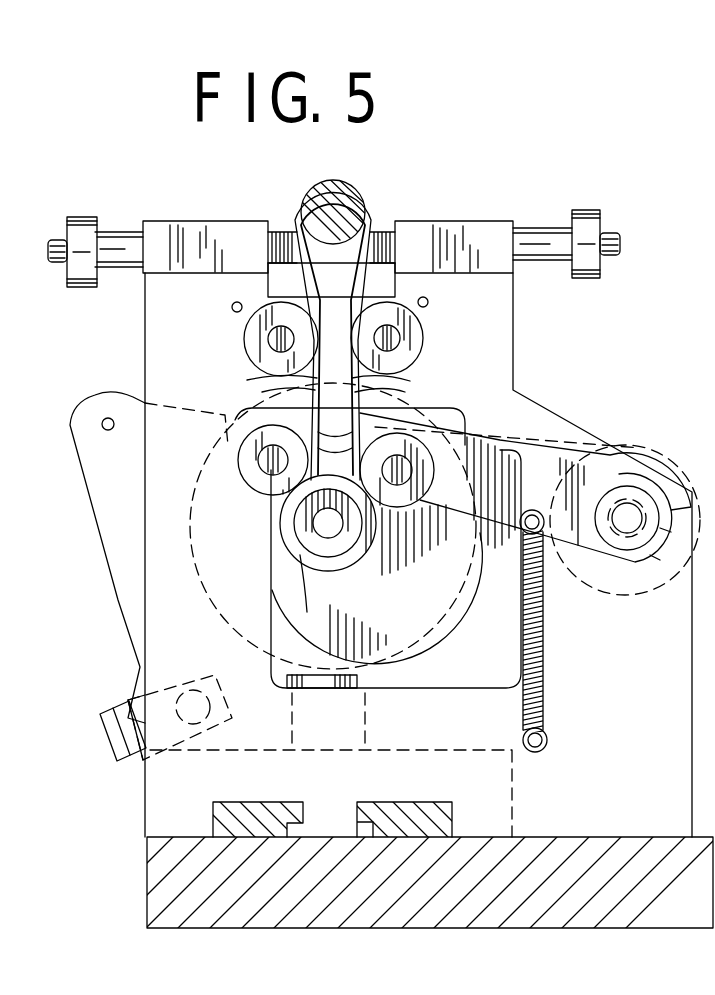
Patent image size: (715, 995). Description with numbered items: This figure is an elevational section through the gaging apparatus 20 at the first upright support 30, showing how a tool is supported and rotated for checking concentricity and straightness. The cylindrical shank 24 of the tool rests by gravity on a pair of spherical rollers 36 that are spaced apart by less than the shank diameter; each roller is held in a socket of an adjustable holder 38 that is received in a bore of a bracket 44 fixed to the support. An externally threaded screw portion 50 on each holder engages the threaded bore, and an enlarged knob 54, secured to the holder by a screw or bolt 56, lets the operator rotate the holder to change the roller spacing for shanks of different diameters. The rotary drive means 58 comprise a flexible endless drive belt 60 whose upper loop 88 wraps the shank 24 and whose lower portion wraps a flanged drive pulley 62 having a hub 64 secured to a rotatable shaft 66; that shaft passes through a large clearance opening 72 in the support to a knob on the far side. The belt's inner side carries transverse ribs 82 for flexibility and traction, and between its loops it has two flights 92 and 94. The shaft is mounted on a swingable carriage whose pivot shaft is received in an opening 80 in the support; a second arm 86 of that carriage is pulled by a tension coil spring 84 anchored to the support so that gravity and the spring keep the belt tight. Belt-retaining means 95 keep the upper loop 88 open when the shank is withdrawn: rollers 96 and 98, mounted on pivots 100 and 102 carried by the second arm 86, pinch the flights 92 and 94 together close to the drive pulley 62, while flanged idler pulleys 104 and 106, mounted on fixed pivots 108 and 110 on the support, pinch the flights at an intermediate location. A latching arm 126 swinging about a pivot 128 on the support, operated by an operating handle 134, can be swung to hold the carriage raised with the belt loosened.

The gaging apparatus 20 is at (563, 188).
The cylindrical shank 24 is at (336, 185).
The first upright support 30 is at (158, 360).
The spherical rollers 36 is at (333, 336).
The adjustable holders 38 is at (118, 232).
The bracket 44 is at (207, 235).
The externally threaded screw portion 50 is at (283, 232).
The knob 54 is at (80, 217).
The screw or bolt 56 is at (48, 252).
The rotary drive means 58 is at (362, 567).
The flexible endless drive belt 60 is at (440, 292).
The flanged drive pulley 62 is at (318, 572).
The hub 64 is at (307, 555).
The rotatable shaft 66 is at (327, 523).
The clearance opening 72 is at (463, 677).
The opening 80 is at (627, 518).
The transverse ribs 82 is at (300, 278).
The tension coil spring 84 is at (545, 695).
The second arm 86 is at (555, 468).
The upper loop 88 is at (355, 185).
The flight 92 is at (300, 385).
The flight 94 is at (372, 380).
The belt-retaining means 95 is at (482, 358).
The roller 96 is at (243, 443).
The roller 98 is at (397, 470).
The shaft or pivot 100 is at (263, 460).
The shaft or pivot 102 is at (410, 452).
The flanged idler pulley 104 is at (244, 340).
The flanged idler pulley 106 is at (421, 330).
The fixed shaft or pivot 108 is at (278, 345).
The fixed shaft or pivot 110 is at (413, 352).
The latching arm 126 is at (115, 585).
The pivot 128 is at (197, 690).
The operating handle 134 is at (107, 735).